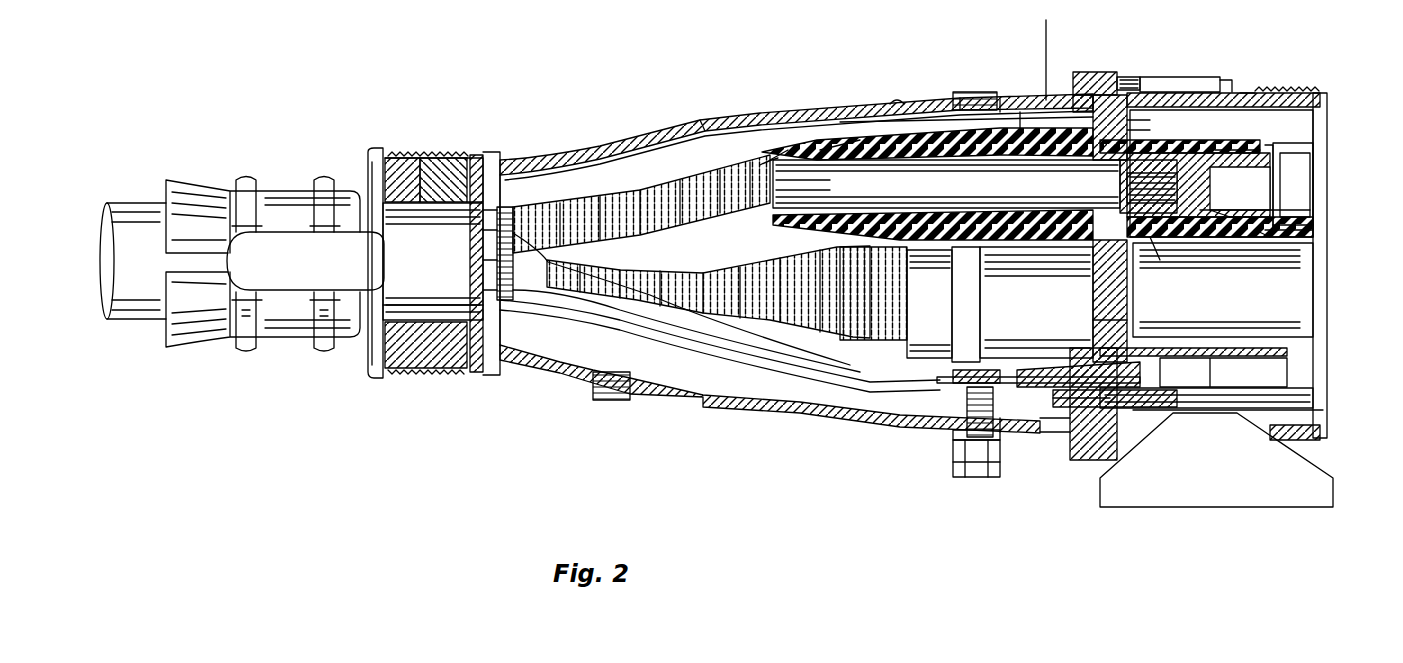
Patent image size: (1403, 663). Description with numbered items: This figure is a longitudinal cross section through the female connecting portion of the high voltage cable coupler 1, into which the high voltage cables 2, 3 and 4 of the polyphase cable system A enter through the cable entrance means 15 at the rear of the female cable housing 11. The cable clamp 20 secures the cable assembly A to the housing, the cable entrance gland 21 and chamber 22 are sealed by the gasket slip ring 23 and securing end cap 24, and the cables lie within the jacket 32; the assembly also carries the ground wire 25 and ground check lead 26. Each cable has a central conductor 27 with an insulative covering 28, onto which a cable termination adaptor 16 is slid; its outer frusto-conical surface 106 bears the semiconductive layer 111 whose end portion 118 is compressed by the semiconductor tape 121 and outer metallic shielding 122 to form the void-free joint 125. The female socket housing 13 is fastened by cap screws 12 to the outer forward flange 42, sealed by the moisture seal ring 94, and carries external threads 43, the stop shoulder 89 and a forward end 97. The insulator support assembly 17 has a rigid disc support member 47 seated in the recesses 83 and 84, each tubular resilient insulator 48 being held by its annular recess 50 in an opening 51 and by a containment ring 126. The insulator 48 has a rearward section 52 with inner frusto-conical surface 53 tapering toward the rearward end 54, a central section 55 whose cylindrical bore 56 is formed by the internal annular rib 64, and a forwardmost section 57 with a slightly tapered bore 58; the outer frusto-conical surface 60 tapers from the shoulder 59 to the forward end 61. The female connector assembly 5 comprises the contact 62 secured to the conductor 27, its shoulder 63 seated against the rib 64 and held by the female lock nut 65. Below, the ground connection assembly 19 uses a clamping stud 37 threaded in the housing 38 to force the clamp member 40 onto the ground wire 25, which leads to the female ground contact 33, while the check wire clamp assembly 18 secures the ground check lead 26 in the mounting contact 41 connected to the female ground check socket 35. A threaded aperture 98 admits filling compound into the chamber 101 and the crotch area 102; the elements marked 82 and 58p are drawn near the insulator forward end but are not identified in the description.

The high voltage cable coupler 1 is at (1038, 14).
The high voltage cable 2 is at (644, 190).
The high voltage cable 3 is at (726, 272).
The high voltage cable 4 is at (562, 320).
The female phase connector assembly 5 is at (1262, 172).
The female cable housing 11 is at (735, 117).
The cap screws 12 is at (1072, 94).
The female socket housing 13 is at (1295, 92).
The cable entrance means 15 is at (455, 366).
The cable termination adaptor 16 is at (935, 255).
The insulator support assembly 17 is at (1100, 285).
The check wire clamp assembly 18 is at (1068, 430).
The ground connection assembly 19 is at (1008, 440).
The cable clamp 20 is at (283, 190).
The cable entrance gland 21 is at (440, 175).
The chamber 22 is at (430, 360).
The gasket slip ring 23 is at (400, 160).
The securing end cap 24 is at (368, 160).
The ground wire 25 is at (540, 245).
The ground check lead 26 is at (612, 322).
The central conductor 27 is at (1170, 237).
The insulative covering 28 is at (1006, 190).
The cable assembly sheathing or jacket 32 is at (458, 258).
The female ground contact 33 is at (1236, 358).
The female ground check socket 35 is at (1250, 405).
The clamping stud 37 is at (955, 450).
The housing 38 is at (1000, 418).
The clamp member 40 is at (990, 385).
The mounting contact 41 is at (1075, 450).
The outer forward flange 42 is at (1098, 72).
The threads 43 is at (1262, 92).
The support member 47 is at (1095, 312).
The tubular resilient insulator 48 is at (1010, 250).
The annular recess 50 is at (1114, 160).
The opening 51 is at (1068, 97).
The rearward section 52 is at (1036, 120).
The inner frusto-conical surface 53 is at (1020, 110).
The rearward end 54 is at (900, 100).
The central section 55 is at (1205, 140).
The inner cylindrical bore 56 is at (1190, 237).
The forwardmost section 57 is at (1275, 150).
The slightly tapered bore 58 is at (1295, 184).
The support 58p is at (1100, 450).
The shoulder 59 is at (1138, 245).
The outer frusto-conical surface 60 is at (1268, 237).
The forward end 61 is at (1313, 148).
The contact 62 is at (1215, 237).
The shoulder 63 is at (1228, 237).
The internal annular rib 64 is at (1228, 150).
The female lock nut 65 is at (1273, 220).
The contact 82 is at (1255, 215).
The annular shoulder or recess 83 is at (1145, 128).
The shoulder or annular recess 84 is at (1127, 112).
The stop or shoulder 89 is at (1230, 80).
The moisture seal ring 94 is at (1120, 77).
The forward end 97 is at (1327, 95).
The threaded aperture 98 is at (985, 92).
The chamber 101 is at (630, 157).
The crotch area 102 is at (575, 254).
The outer frusto-conical surface 106 is at (915, 122).
The semiconductive resilient layer 111 is at (826, 162).
The semiconductive layer end portion 118 is at (810, 154).
The semiconductor tape 121 is at (820, 150).
The metallic shielding 122 is at (768, 158).
The void-free joint 125 is at (780, 162).
The containment ring 126 is at (935, 100).
The high voltage polyphase cable system A is at (400, 305).